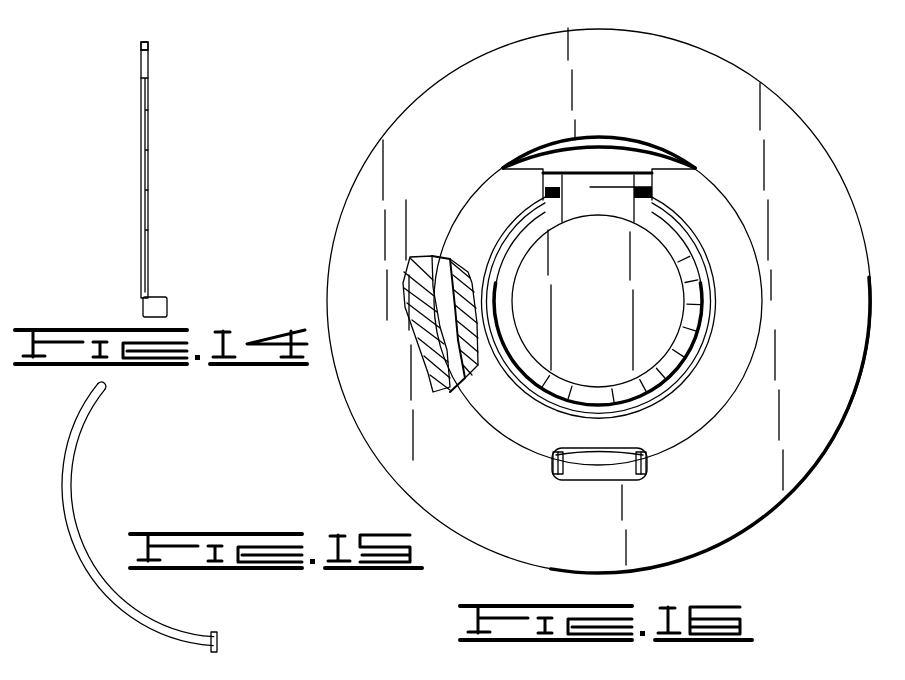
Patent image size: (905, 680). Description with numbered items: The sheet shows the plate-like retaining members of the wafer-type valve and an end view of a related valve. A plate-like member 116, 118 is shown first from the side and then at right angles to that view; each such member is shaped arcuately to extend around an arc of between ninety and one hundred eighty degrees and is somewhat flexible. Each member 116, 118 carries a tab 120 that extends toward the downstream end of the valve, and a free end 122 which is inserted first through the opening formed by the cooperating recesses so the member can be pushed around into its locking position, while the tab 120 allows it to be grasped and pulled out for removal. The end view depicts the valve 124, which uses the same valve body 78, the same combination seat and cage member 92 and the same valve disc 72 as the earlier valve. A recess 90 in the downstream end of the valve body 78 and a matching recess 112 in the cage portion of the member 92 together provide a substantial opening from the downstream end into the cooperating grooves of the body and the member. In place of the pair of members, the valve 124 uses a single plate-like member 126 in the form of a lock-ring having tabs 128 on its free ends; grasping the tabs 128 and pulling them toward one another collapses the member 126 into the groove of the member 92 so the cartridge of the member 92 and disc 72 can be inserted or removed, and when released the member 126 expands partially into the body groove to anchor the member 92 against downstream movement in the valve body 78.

In FIG. 16, the valve disc 72 is at (612, 294).
In FIG. 16, the valve body 78 is at (718, 82).
In FIG. 16, the recess 90 is at (600, 470).
In FIG. 16, the combination seat and cage member 92 is at (760, 275).
In FIG. 16, the recess 112 is at (600, 452).
In FIG. 14, the plate-like member 116 is at (199, 170).
In FIG. 15, the plate-like member 116 is at (138, 515).
In FIG. 14, the plate-like member 118 is at (146, 175).
In FIG. 15, the plate-like member 118 is at (72, 488).
In FIG. 14, the tab 120 is at (152, 307).
In FIG. 15, the tab 120 is at (220, 637).
In FIG. 14, the free end 122 is at (146, 46).
In FIG. 15, the free end 122 is at (99, 394).
In FIG. 16, the valve 124 is at (599, 300).
In FIG. 16, the plate-like member 126 is at (408, 286).
In FIG. 16, the tabs 128 is at (555, 463).